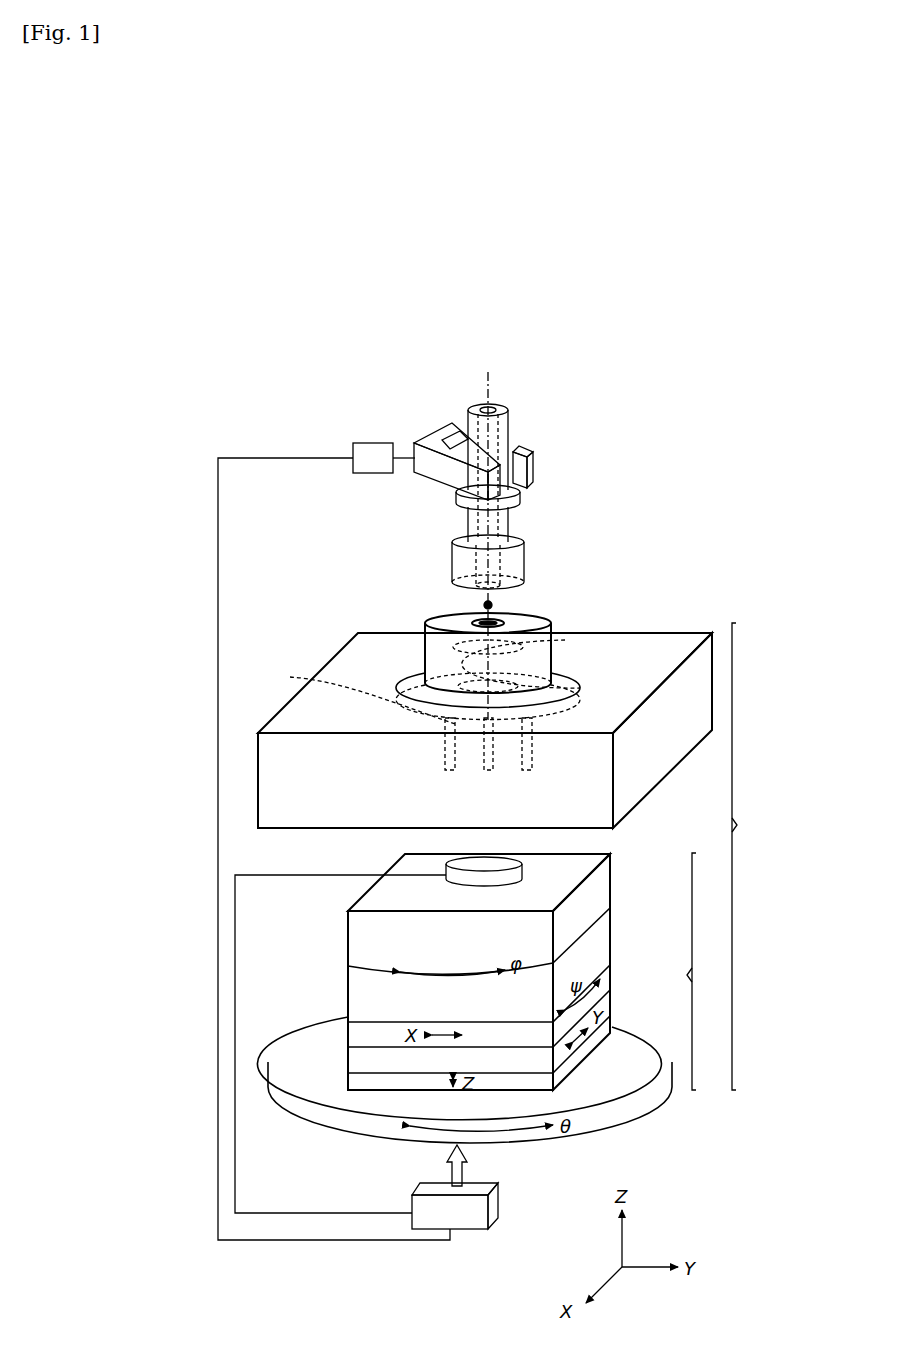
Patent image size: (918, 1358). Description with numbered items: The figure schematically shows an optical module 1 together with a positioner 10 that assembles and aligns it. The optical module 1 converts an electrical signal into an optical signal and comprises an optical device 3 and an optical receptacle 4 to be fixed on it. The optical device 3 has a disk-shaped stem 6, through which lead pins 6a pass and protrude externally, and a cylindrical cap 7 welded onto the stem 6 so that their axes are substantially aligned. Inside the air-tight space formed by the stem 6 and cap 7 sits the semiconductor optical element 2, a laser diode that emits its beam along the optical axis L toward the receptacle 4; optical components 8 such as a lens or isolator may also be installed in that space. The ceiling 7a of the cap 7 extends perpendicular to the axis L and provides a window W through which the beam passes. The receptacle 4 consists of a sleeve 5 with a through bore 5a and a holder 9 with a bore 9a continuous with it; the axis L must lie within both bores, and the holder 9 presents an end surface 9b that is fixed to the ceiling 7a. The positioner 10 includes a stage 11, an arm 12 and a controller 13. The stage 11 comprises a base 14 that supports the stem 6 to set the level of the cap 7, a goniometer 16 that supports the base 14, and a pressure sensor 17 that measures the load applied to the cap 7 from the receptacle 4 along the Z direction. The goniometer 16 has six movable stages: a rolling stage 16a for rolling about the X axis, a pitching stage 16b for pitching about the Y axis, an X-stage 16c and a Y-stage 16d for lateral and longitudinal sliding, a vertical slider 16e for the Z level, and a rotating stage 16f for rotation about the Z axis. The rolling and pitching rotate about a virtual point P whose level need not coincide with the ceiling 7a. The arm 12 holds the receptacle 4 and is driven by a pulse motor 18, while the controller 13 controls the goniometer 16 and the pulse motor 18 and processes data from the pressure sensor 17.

The optical module 1 is at (596, 507).
The semiconductor optical element 2 is at (570, 640).
The optical device 3 is at (557, 622).
The optical receptacle 4 is at (515, 436).
The sleeve 5 is at (509, 418).
The bore 5a is at (485, 407).
The stem 6 is at (410, 676).
The lead pins 6a is at (357, 694).
The cap 7 is at (420, 618).
The ceiling 7a is at (439, 612).
The optical components 8 is at (523, 643).
The holder 9 is at (530, 548).
The bore 9a is at (478, 560).
The end surface 9b is at (538, 587).
The positioner 10 is at (657, 1148).
The stage 11 is at (749, 856).
The arm 12 is at (430, 437).
The controller 13 is at (492, 1223).
The base 14 is at (660, 782).
The goniometer 16 is at (535, 971).
The rolling stage 16a is at (612, 890).
The pitching stage 16b is at (612, 938).
The X-stage 16c is at (612, 984).
The Y-stage 16d is at (610, 1006).
The vertical slider 16e is at (586, 1047).
The rotating stage 16f is at (645, 1103).
The pressure sensor 17 is at (446, 872).
The pulse motor 18 is at (364, 442).
The optical axis L is at (491, 384).
The virtual point P is at (483, 603).
The window W is at (530, 607).